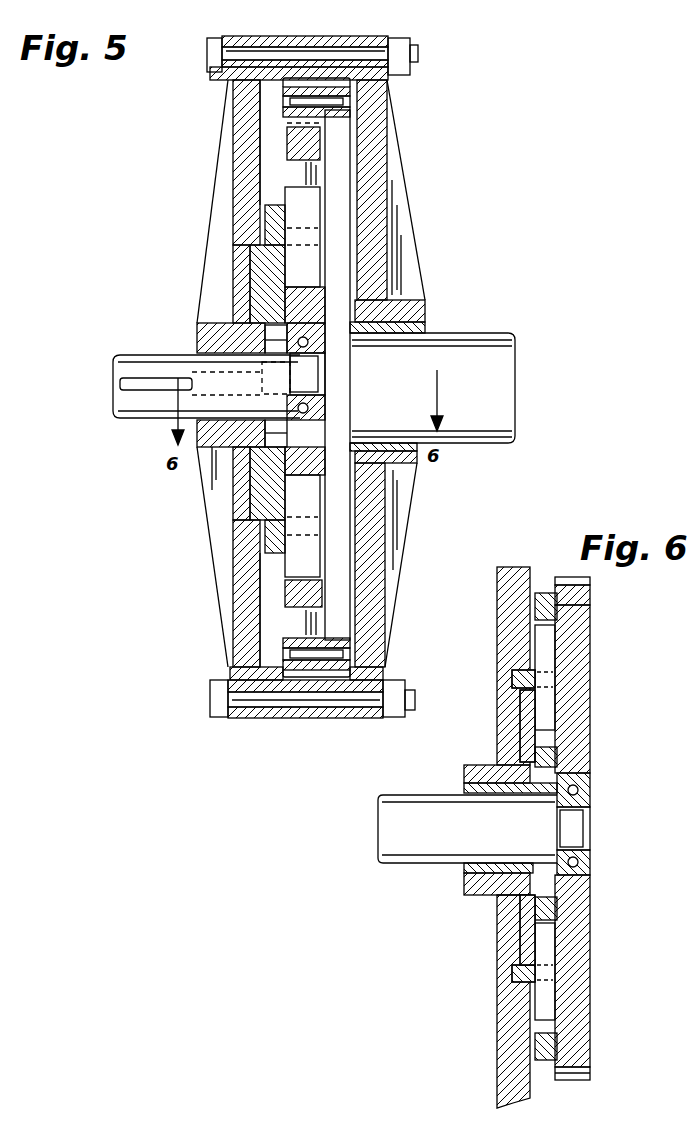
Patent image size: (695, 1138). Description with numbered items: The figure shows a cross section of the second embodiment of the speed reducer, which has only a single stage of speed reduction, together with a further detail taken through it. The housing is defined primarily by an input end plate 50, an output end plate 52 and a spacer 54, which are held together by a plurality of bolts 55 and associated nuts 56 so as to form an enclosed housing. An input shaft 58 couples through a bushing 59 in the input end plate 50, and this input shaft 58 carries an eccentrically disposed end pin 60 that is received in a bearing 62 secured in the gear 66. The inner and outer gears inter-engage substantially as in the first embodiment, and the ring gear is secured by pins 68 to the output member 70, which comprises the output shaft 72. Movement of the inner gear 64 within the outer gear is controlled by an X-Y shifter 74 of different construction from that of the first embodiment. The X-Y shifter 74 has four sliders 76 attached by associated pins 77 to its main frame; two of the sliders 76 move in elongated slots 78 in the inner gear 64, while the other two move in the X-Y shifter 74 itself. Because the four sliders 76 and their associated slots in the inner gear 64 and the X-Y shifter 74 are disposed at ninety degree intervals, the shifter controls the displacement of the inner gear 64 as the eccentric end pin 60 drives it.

In FIG. 5, the input end plate 50 is at (236, 176).
In FIG. 6, the input end plate 50 is at (506, 1047).
In FIG. 5, the output end plate 52 is at (373, 162).
In FIG. 5, the spacer 54 is at (316, 36).
In FIG. 5, the bolts 55 is at (345, 50).
In FIG. 5, the nuts 56 is at (405, 75).
In FIG. 5, the input shaft 58 is at (148, 412).
In FIG. 6, the input shaft 58 is at (430, 864).
In FIG. 5, the bushing 59 is at (220, 437).
In FIG. 6, the bushing 59 is at (478, 777).
In FIG. 5, the end pin 60 is at (245, 368).
In FIG. 6, the end pin 60 is at (575, 828).
In FIG. 5, the bearing 62 is at (322, 397).
In FIG. 6, the bearing 62 is at (590, 797).
In FIG. 5, the inner gear 64 is at (318, 305).
In FIG. 6, the inner gear 64 is at (573, 750).
In FIG. 5, the gear 66 is at (290, 108).
In FIG. 5, the pins 68 is at (307, 648).
In FIG. 5, the output member 70 is at (340, 352).
In FIG. 5, the output shaft 72 is at (485, 332).
In FIG. 5, the X-Y shifter 74 is at (272, 278).
In FIG. 6, the X-Y shifter 74 is at (590, 598).
In FIG. 5, the sliders 76 is at (300, 198).
In FIG. 6, the sliders 76 is at (545, 648).
In FIG. 5, the pins 77 is at (272, 231).
In FIG. 6, the pins 77 is at (520, 678).
In FIG. 6, the elongated slots 78 is at (540, 606).